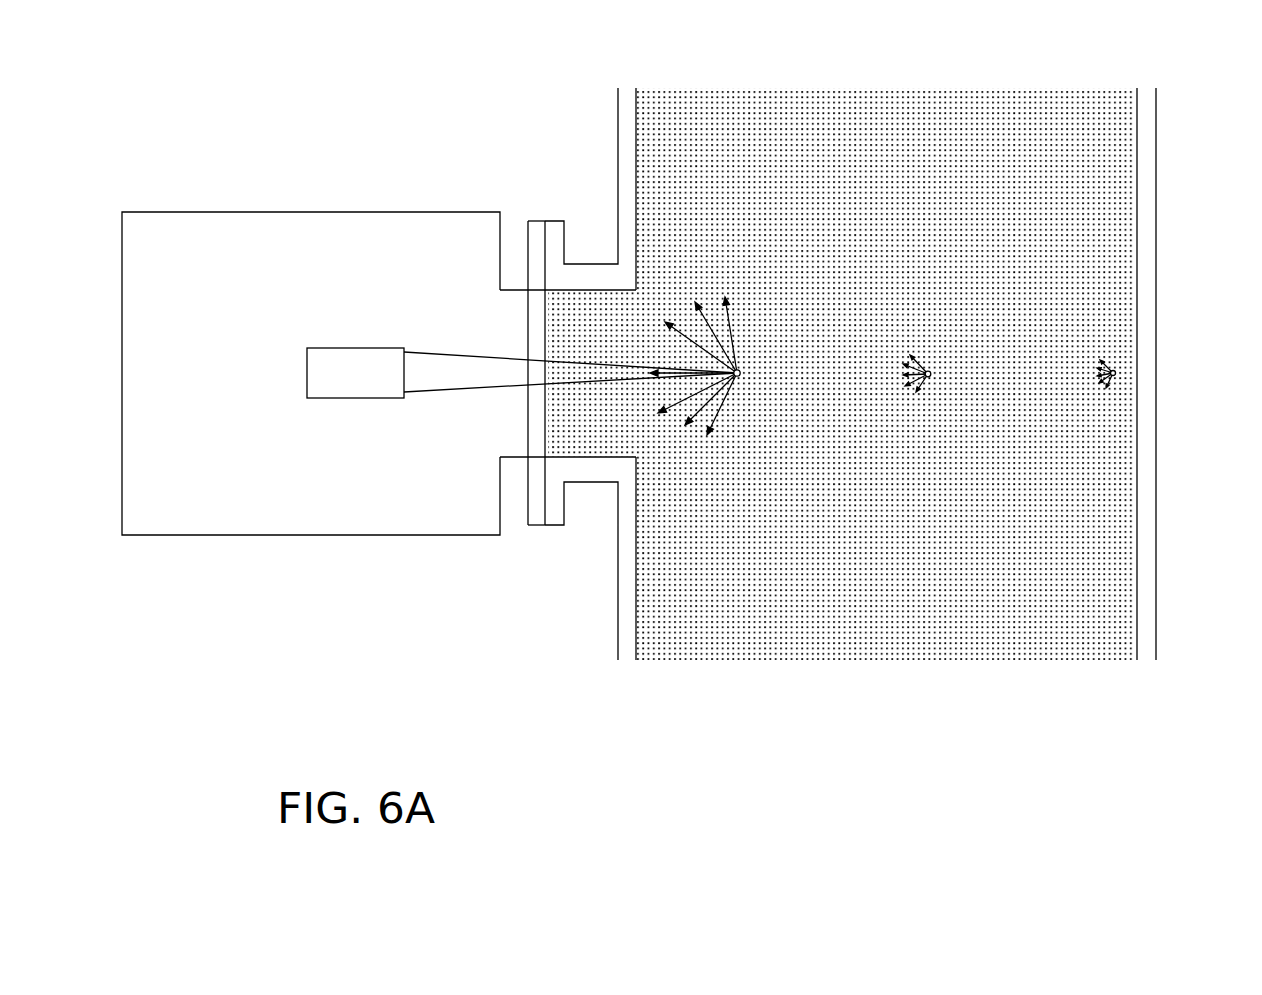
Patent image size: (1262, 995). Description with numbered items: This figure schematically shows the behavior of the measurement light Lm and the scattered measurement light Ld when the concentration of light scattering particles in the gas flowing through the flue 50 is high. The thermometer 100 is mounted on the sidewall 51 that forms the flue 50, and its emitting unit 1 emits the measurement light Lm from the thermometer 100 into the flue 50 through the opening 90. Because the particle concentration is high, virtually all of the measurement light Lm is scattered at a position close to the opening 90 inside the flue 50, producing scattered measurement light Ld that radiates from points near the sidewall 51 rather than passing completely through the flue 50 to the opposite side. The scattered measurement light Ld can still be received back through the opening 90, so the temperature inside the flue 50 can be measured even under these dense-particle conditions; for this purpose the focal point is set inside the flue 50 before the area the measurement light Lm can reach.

The thermometer 100 is at (296, 211).
The emitting unit 1 is at (357, 398).
The opening 90 is at (590, 433).
The flue 50 is at (998, 139).
The sidewall 51 is at (625, 656).
The measurement light Lm is at (568, 365).
The scattered measurement light Ld is at (928, 382).